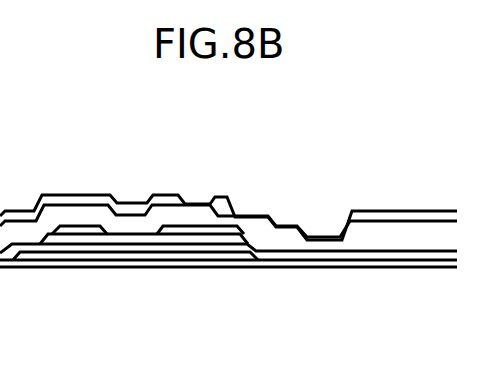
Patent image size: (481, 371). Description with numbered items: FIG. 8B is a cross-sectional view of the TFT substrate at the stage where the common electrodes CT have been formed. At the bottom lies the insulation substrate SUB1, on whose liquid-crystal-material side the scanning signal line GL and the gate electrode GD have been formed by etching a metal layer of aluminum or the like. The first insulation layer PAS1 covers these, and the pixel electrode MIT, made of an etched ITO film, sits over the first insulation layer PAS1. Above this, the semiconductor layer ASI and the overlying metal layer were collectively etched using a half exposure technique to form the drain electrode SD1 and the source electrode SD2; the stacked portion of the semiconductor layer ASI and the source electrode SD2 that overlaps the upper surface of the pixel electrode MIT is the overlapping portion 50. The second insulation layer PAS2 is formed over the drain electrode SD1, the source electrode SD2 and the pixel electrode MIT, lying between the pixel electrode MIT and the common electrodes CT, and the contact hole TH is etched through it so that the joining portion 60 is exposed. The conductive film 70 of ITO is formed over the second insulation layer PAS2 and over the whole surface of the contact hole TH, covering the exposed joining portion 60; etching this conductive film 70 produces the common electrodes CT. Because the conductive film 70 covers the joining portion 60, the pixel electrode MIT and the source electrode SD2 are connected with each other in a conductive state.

The insulation substrate SUB1 is at (290, 270).
The scanning signal line GL is at (143, 258).
The gate electrode GD is at (135, 293).
The joining portion 60 is at (278, 248).
The semiconductor layer ASI is at (127, 232).
The drain electrode SD1 is at (77, 228).
The source electrode SD2 is at (172, 227).
The first insulation layer PAS1 is at (112, 248).
The second insulation layer PAS2 is at (87, 208).
The common electrode CT is at (108, 198).
The overlapping portion 50 is at (290, 222).
The conductive film 70 is at (300, 223).
The contact hole TH is at (338, 214).
The pixel electrode MIT is at (366, 252).